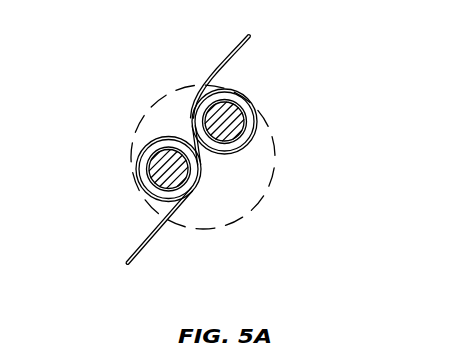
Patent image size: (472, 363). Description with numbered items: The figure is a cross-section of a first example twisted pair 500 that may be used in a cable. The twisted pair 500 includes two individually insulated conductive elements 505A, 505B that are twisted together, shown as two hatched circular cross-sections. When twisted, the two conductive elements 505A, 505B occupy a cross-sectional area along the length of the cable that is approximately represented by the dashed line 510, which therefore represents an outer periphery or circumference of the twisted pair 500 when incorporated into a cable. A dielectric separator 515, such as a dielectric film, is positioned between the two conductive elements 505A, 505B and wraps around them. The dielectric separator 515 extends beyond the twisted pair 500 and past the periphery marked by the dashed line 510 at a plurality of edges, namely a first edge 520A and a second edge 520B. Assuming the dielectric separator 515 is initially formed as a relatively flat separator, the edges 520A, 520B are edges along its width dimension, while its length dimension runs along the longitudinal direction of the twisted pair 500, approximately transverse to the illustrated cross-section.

The twisted pair 500 is at (258, 229).
The conductive element 505A is at (137, 171).
The conductive element 505B is at (257, 123).
The dashed line 510 is at (221, 177).
The dielectric separator 515 is at (218, 176).
The first edge 520A is at (126, 268).
The second edge 520B is at (243, 29).